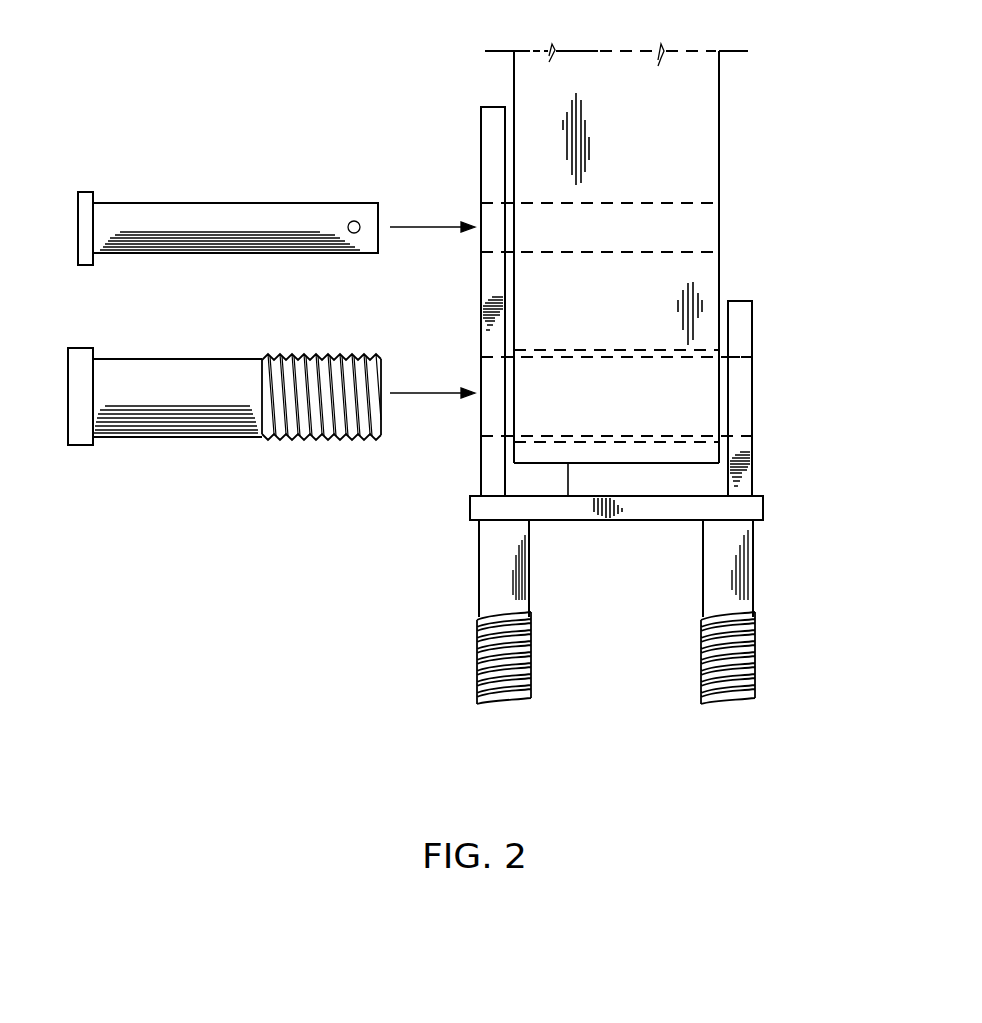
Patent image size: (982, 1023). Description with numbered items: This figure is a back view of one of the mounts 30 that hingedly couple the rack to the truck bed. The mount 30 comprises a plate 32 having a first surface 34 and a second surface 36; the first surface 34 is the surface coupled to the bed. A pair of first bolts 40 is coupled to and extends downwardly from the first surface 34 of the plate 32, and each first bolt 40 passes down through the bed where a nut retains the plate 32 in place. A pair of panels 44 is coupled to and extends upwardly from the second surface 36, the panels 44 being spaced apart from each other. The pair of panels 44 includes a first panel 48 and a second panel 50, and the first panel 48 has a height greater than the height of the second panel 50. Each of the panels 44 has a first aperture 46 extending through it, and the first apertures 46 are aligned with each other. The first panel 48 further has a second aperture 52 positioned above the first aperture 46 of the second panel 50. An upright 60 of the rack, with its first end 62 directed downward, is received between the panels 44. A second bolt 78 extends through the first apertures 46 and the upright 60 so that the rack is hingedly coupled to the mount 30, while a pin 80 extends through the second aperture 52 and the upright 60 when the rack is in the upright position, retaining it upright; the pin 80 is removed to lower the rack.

The mount 30 is at (770, 452).
The plate 32 is at (763, 507).
The first surface 34 is at (638, 520).
The second surface 36 is at (520, 496).
The first bolt 40 is at (703, 685).
The panel 44 is at (482, 107).
The first aperture 46 is at (480, 378).
The first panel 48 is at (737, 301).
The second panel 50 is at (495, 107).
The second aperture 52 is at (480, 217).
The upright 60 is at (720, 136).
The first end 62 is at (568, 496).
The second bolt 78 is at (138, 359).
The pin 80 is at (132, 203).